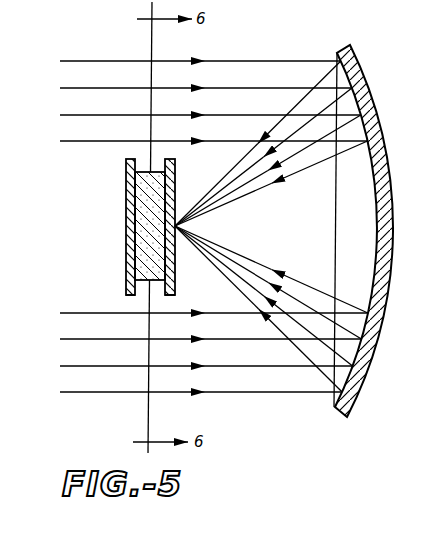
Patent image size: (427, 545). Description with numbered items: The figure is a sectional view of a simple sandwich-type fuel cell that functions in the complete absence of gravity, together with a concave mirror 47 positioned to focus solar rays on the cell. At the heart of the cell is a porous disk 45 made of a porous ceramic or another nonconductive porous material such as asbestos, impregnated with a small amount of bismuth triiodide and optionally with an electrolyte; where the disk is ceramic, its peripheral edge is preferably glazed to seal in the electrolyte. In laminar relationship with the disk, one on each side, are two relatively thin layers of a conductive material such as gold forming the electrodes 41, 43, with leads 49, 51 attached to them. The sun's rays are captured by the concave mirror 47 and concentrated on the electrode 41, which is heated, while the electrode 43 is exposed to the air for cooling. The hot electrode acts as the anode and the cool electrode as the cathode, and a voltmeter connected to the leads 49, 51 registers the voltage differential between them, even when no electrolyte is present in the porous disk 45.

The electrode 41 is at (176, 178).
The electrode 43 is at (126, 181).
The porous disk 45 is at (155, 172).
The concave mirror 47 is at (337, 208).
The lead 49 is at (127, 294).
The lead 51 is at (175, 295).